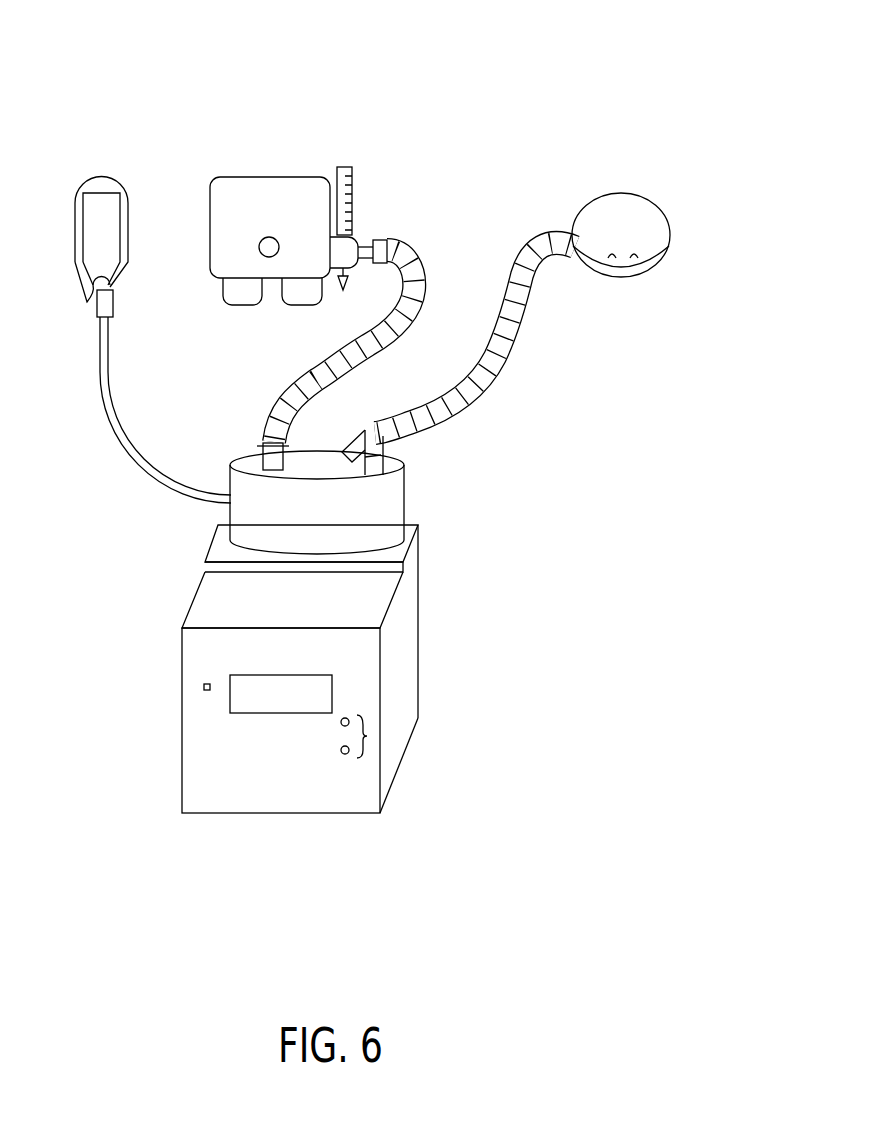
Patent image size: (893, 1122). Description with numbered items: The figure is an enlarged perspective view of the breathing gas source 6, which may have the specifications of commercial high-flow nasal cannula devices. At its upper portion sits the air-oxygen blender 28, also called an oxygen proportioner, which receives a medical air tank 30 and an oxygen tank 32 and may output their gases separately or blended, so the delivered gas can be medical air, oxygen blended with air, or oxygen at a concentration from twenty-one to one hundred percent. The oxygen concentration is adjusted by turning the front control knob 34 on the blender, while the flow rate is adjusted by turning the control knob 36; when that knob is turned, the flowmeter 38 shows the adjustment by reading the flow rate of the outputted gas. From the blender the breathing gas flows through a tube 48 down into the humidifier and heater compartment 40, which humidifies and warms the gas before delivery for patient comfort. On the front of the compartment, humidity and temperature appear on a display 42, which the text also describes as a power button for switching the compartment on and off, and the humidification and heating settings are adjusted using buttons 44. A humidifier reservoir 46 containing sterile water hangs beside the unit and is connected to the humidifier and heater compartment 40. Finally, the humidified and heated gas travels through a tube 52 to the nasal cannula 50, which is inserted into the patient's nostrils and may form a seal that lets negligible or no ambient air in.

The breathing gas source 6 is at (456, 88).
The air-oxygen blender 28 is at (258, 176).
The medical air tank 30 is at (233, 308).
The oxygen tank 32 is at (302, 308).
The front control knob 34 is at (258, 247).
The control knob 36 is at (340, 294).
The flowmeter 38 is at (347, 166).
The humidifier and heater compartment 40 is at (342, 815).
The display 42 is at (204, 687).
The buttons 44 is at (367, 736).
The humidifier reservoir 46 is at (129, 206).
The tube 48 is at (420, 292).
The nasal cannula 50 is at (663, 260).
The tube 52 is at (514, 345).